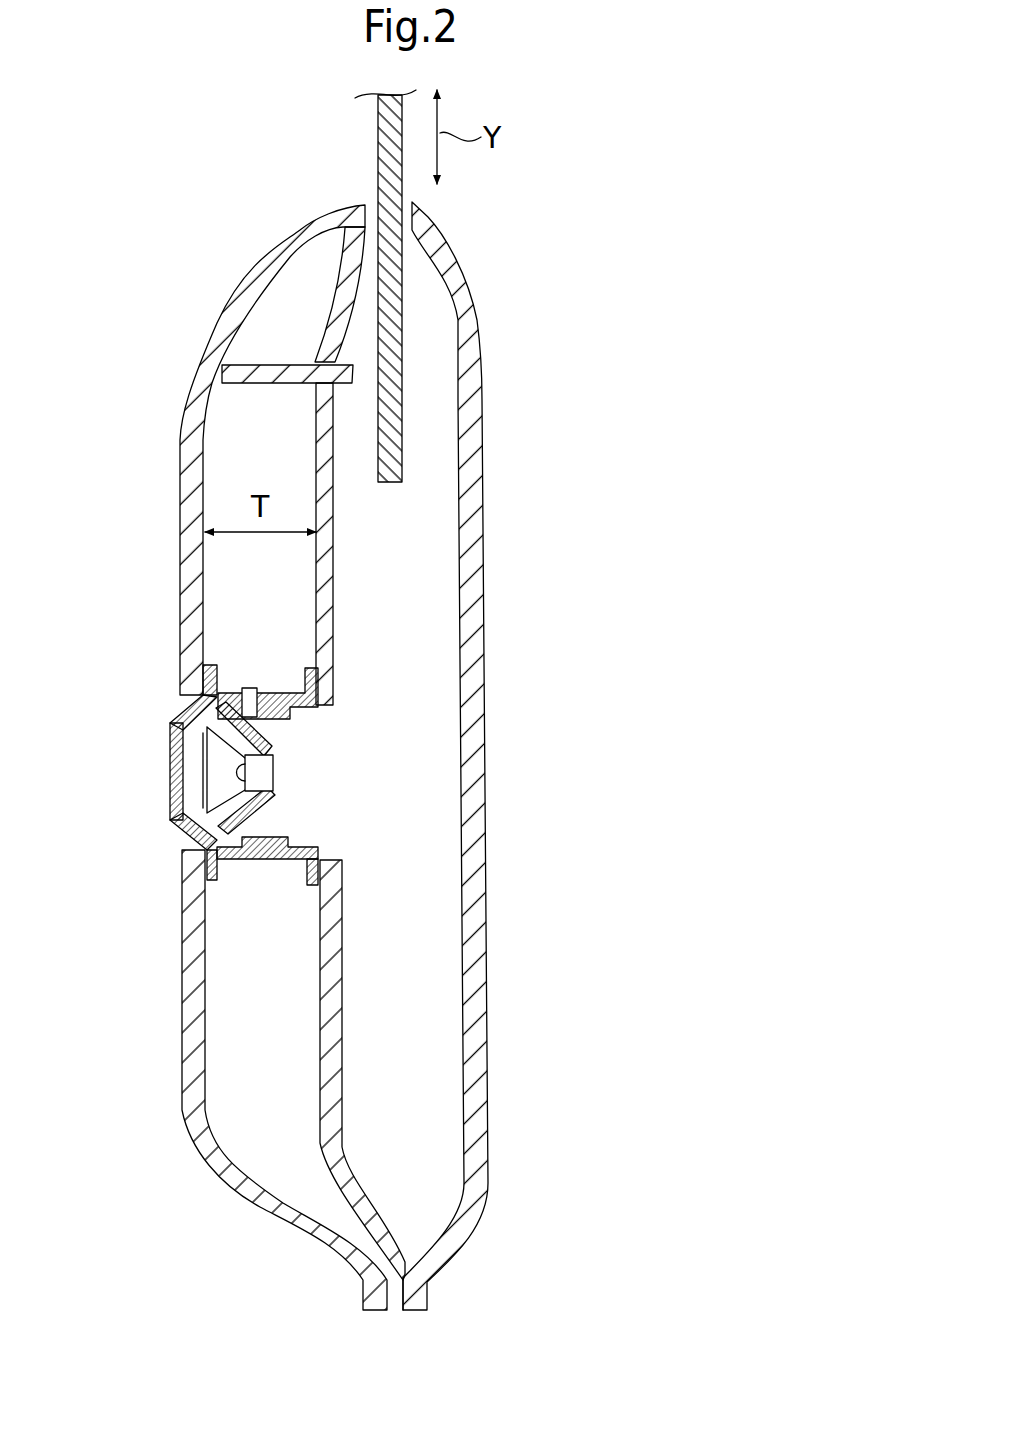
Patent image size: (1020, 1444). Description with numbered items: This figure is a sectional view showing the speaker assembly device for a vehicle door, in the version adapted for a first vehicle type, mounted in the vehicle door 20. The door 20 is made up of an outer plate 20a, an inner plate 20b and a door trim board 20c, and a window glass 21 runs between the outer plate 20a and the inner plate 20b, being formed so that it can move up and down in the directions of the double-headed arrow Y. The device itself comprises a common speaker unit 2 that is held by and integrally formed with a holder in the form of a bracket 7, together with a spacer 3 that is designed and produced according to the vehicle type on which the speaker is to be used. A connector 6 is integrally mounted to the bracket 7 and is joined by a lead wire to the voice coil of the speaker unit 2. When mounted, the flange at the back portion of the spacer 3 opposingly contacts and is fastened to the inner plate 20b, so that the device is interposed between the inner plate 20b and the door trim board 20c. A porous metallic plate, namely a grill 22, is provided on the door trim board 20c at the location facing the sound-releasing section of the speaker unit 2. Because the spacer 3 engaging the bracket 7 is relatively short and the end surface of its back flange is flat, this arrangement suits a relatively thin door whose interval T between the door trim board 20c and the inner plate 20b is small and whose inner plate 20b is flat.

The speaker unit 2 is at (169, 764).
The spacer 3 is at (290, 860).
The connector 6 is at (248, 688).
The bracket 7 is at (247, 860).
The vehicle door 20 is at (404, 762).
The outer plate 20a is at (484, 1043).
The inner plate 20b is at (336, 1128).
The door trim board 20c is at (288, 1223).
The window glass 21 is at (402, 295).
The grill 22 is at (170, 780).